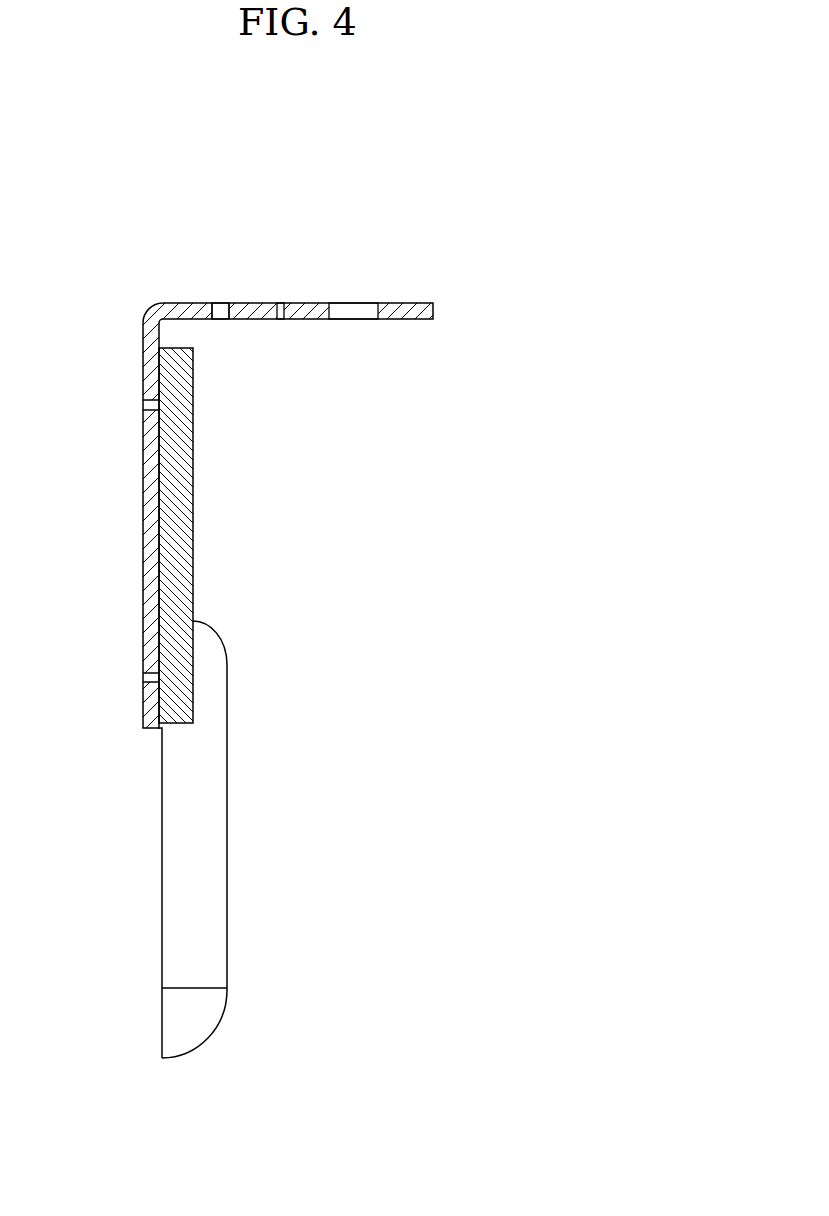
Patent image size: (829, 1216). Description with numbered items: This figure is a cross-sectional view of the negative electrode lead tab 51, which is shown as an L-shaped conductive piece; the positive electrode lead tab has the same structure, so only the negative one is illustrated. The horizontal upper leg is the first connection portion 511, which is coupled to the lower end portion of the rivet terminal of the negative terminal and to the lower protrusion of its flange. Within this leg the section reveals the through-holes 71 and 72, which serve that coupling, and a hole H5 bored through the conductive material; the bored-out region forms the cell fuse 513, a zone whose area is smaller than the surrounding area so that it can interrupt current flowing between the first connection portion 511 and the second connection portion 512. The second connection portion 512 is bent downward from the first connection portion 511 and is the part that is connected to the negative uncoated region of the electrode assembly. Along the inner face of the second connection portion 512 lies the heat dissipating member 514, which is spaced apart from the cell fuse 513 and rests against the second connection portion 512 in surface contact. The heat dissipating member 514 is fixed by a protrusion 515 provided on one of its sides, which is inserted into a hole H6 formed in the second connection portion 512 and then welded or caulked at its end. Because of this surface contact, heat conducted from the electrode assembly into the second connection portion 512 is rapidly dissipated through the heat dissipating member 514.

The negative electrode lead tab 51 is at (293, 146).
The first connection portion 511 is at (416, 299).
The second connection portion 512 is at (132, 527).
The cell fuse 513 is at (220, 303).
The heat dissipating member 514 is at (180, 492).
The protrusion 515 is at (143, 428).
The hole H5 is at (220, 320).
The hole H6 is at (146, 403).
The through-hole 71 is at (351, 303).
The through-hole 72 is at (280, 303).